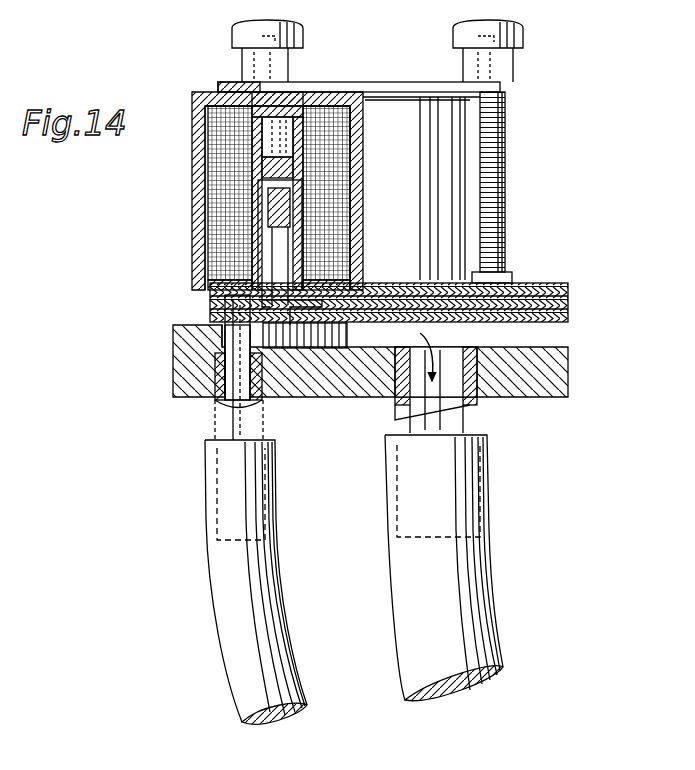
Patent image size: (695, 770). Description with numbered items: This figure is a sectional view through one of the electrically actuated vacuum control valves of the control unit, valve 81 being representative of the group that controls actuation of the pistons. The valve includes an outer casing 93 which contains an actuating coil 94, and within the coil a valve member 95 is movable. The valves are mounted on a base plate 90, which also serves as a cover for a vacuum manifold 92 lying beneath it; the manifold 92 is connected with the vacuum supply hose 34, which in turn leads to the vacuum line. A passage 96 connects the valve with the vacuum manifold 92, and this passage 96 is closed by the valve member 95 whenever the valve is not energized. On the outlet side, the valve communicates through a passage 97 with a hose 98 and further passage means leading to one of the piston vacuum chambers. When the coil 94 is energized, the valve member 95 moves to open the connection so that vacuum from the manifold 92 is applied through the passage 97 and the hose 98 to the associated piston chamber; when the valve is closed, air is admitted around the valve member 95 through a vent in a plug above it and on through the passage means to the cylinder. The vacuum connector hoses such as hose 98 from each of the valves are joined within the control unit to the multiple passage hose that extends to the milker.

The vacuum control valve 81 is at (190, 168).
The outer casing 93 is at (193, 100).
The actuating coil 94 is at (335, 130).
The valve member 95 is at (270, 240).
The base plate 90 is at (545, 283).
The passage 96 is at (300, 325).
The vacuum manifold 92 is at (540, 335).
The passage 97 is at (235, 335).
The hose 98 is at (228, 628).
The hose 34 is at (480, 590).